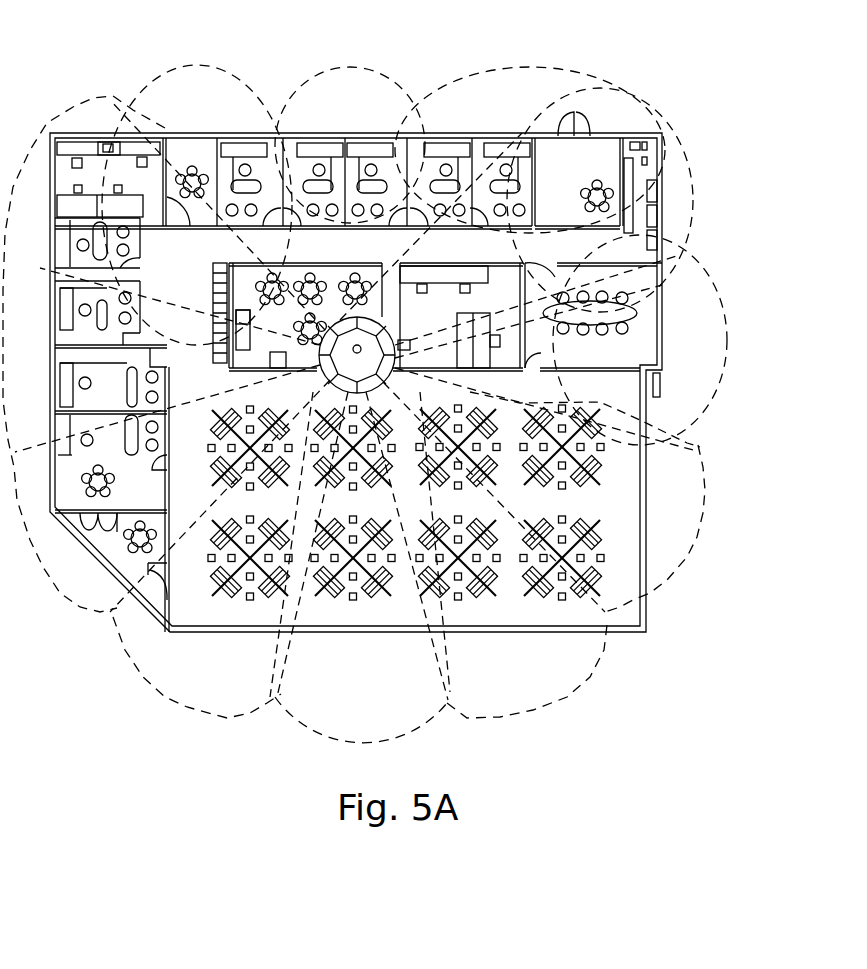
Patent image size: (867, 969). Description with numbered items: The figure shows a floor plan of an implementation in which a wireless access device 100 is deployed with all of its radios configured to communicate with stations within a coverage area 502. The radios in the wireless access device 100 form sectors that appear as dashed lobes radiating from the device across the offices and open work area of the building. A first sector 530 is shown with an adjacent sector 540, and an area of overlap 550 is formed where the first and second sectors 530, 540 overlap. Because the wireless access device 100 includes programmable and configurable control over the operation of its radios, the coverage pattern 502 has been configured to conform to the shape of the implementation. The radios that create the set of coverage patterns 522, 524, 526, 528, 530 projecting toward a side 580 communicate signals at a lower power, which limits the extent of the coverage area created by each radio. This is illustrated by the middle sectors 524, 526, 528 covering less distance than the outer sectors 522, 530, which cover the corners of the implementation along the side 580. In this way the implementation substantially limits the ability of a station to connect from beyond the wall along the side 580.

The wireless access device 100 is at (357, 355).
The coverage area 502 is at (665, 674).
The outer sector 522 is at (102, 133).
The middle sector 524 is at (258, 130).
The middle sector 526 is at (370, 130).
The middle sector 528 is at (463, 130).
The first sector 530 is at (627, 125).
The adjacent sector 540 is at (578, 378).
The area of overlap 550 is at (695, 219).
The side 580 is at (190, 133).